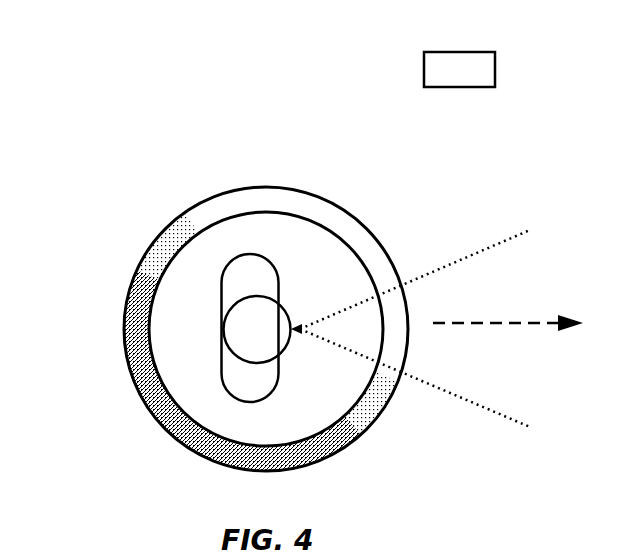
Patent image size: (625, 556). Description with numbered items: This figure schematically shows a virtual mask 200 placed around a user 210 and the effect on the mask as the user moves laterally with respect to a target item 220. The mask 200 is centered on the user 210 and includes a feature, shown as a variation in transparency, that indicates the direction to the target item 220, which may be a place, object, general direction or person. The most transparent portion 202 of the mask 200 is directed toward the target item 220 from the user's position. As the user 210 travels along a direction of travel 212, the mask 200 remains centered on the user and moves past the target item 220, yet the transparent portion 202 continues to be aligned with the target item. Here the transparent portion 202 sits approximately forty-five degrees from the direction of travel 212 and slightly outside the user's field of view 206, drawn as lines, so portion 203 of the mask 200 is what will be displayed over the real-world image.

The virtual mask 200 is at (102, 186).
The transparent portion 202 is at (265, 188).
The portion of the mask 203 is at (404, 350).
The field of view 206 is at (496, 248).
The user 210 is at (248, 402).
The direction of travel 212 is at (490, 322).
The target item 220 is at (465, 52).